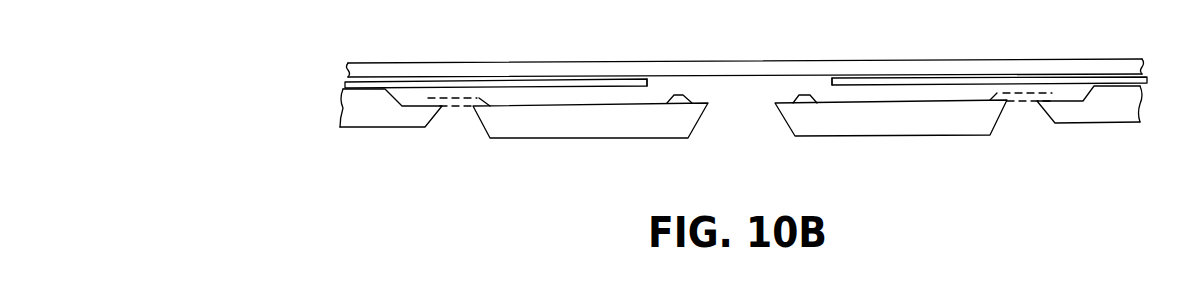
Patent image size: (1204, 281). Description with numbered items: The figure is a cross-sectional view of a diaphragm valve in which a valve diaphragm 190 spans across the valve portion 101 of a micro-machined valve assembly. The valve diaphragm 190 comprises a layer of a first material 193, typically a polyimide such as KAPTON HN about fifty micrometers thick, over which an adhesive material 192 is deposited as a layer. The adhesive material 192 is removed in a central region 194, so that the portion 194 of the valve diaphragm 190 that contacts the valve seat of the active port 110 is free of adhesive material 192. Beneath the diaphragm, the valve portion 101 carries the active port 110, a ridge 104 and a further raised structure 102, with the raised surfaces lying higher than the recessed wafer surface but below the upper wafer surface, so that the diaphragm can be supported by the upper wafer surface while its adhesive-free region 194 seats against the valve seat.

The valve diaphragm 190 is at (462, 51).
The layer of first material 193 is at (348, 70).
The adhesive material 192 is at (345, 85).
The region free of adhesive 194 is at (752, 66).
The valve portion 101 is at (340, 108).
The first pad 102 is at (468, 142).
The active port 110 is at (764, 108).
The ridge 104 is at (1027, 106).